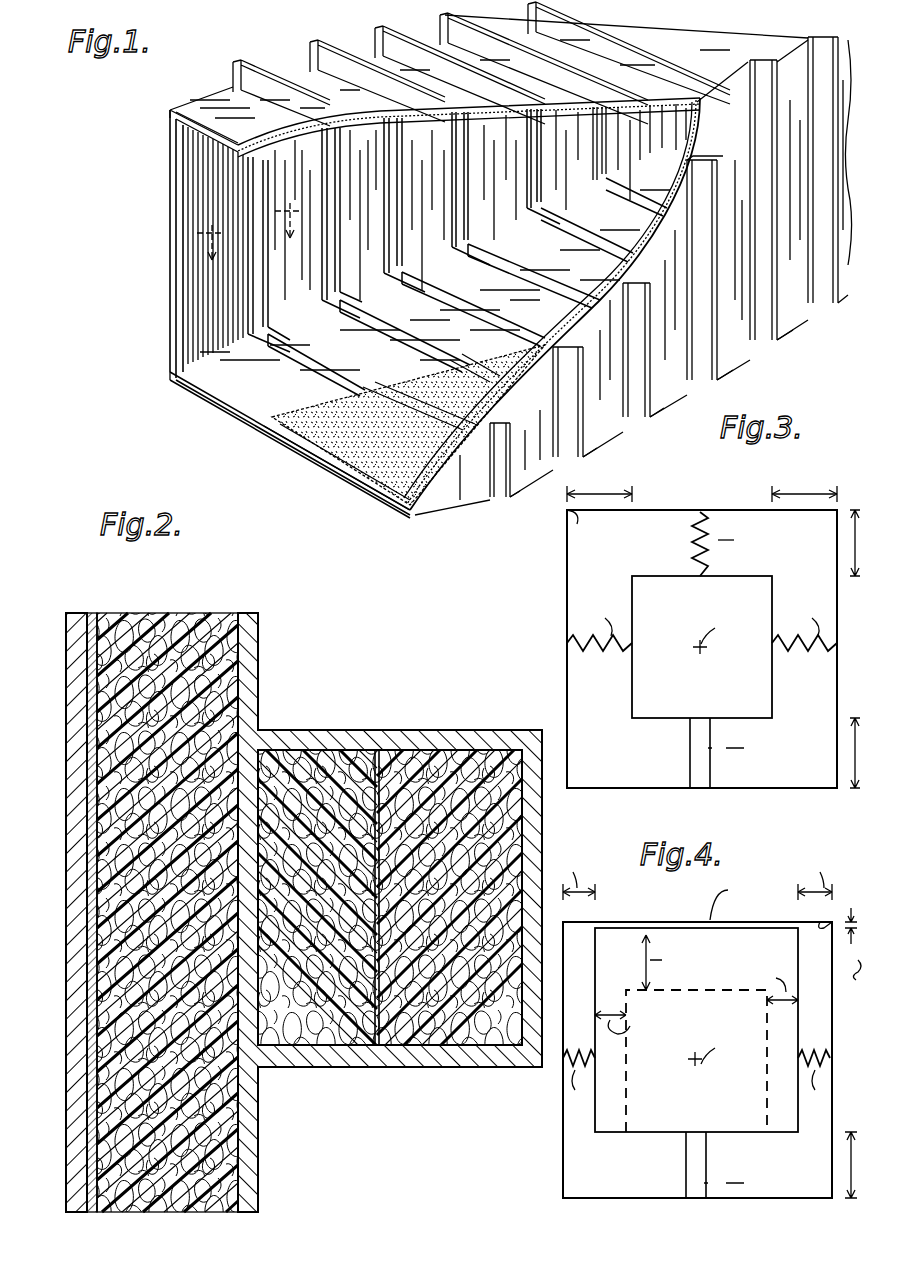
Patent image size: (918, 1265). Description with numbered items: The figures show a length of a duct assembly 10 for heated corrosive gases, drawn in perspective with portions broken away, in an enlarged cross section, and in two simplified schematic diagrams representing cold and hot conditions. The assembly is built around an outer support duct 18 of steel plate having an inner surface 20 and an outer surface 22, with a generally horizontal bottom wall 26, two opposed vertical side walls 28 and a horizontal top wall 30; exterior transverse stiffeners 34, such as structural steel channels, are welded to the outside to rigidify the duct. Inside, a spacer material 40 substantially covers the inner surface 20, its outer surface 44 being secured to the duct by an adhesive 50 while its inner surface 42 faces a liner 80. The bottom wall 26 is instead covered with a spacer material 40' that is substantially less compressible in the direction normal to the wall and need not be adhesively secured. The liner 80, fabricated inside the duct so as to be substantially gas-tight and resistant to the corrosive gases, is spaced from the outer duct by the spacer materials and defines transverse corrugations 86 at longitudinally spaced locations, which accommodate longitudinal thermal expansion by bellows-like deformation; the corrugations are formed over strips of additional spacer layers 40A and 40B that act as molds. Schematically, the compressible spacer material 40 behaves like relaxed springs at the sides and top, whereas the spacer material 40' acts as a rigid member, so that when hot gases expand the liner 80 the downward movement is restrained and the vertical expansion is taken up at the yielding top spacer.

In FIG. 1, the duct assembly 10 is at (270, 42).
In FIG. 1, the outer support duct 18 is at (204, 110).
In FIG. 2, the outer support duct 18 is at (90, 612).
In FIG. 3, the outer support duct 18 is at (666, 508).
In FIG. 4, the outer support duct 18 is at (616, 923).
In FIG. 2, the inner surface 20 is at (104, 634).
In FIG. 3, the inner surface 20 is at (563, 544).
In FIG. 4, the inner surface 20 is at (830, 928).
In FIG. 2, the outer surface 22 is at (64, 676).
In FIG. 1, the bottom wall 26 is at (369, 496).
In FIG. 1, the side walls 28 is at (168, 327).
In FIG. 2, the side walls 28 is at (66, 620).
In FIG. 1, the top wall 30 is at (192, 106).
In FIG. 1, the stiffeners 34 is at (374, 47).
In FIG. 1, the spacer material 40 is at (385, 314).
In FIG. 2, the spacer material 40 is at (376, 890).
In FIG. 1, the spacer material 40' is at (408, 425).
In FIG. 2, the additional layer of spacer material 40A is at (272, 716).
In FIG. 2, the additional layer of spacer material 40B is at (445, 746).
In FIG. 2, the inner surface 42 is at (232, 668).
In FIG. 2, the outer surface 44 is at (106, 689).
In FIG. 2, the adhesive 50 is at (123, 748).
In FIG. 1, the liner 80 is at (230, 392).
In FIG. 2, the liner 80 is at (258, 630).
In FIG. 3, the liner 80 is at (630, 709).
In FIG. 4, the liner 80 is at (604, 1130).
In FIG. 1, the corrugations 86 is at (354, 345).
In FIG. 2, the corrugations 86 is at (385, 730).